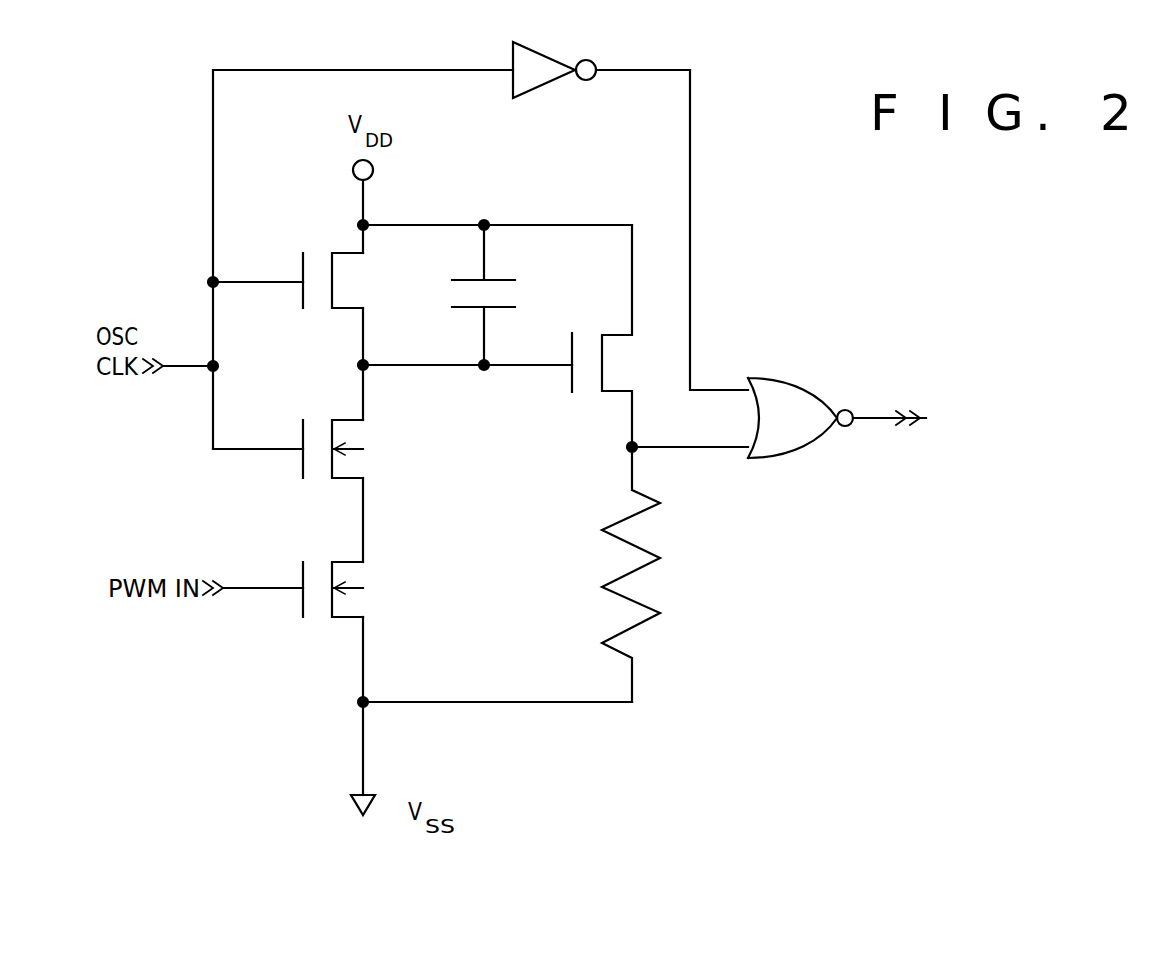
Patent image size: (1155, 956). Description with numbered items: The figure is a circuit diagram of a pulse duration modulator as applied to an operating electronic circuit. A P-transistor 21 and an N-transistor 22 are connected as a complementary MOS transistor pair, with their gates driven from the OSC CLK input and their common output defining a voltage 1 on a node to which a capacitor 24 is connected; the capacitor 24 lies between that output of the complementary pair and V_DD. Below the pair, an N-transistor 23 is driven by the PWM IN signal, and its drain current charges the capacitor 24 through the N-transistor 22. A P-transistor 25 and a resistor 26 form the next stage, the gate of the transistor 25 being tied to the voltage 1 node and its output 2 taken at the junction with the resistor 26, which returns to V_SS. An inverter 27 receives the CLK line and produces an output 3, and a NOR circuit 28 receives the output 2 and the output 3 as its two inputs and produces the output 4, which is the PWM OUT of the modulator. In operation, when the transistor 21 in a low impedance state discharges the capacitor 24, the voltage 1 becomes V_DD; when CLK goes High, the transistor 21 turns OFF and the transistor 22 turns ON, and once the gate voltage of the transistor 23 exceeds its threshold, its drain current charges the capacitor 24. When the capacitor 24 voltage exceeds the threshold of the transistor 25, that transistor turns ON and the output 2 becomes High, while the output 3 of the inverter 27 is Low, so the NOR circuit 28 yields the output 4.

The voltage 1 is at (484, 369).
The output 2 is at (700, 448).
The output 3 is at (705, 390).
The output 4 is at (880, 418).
The P-transistor 21 is at (355, 286).
The N-transistor 22 is at (374, 437).
The N-transistor 23 is at (375, 576).
The capacitor 24 is at (520, 307).
The P-transistor 25 is at (582, 400).
The resistor 26 is at (657, 578).
The inverter 27 is at (548, 52).
The NOR circuit 28 is at (770, 405).